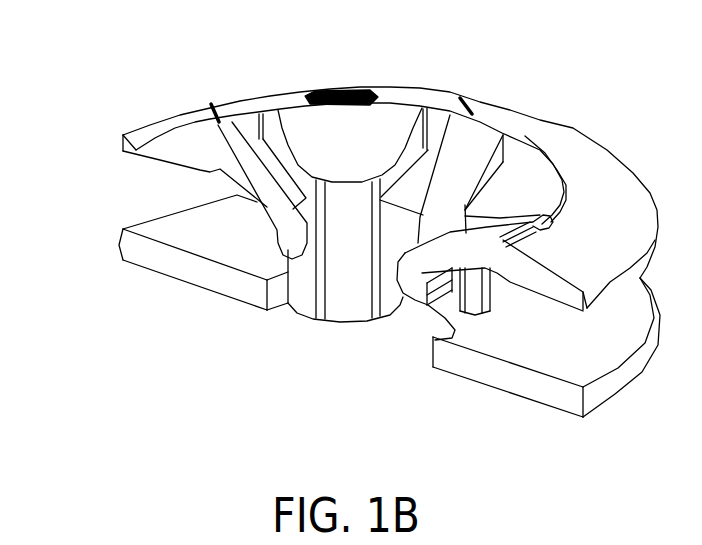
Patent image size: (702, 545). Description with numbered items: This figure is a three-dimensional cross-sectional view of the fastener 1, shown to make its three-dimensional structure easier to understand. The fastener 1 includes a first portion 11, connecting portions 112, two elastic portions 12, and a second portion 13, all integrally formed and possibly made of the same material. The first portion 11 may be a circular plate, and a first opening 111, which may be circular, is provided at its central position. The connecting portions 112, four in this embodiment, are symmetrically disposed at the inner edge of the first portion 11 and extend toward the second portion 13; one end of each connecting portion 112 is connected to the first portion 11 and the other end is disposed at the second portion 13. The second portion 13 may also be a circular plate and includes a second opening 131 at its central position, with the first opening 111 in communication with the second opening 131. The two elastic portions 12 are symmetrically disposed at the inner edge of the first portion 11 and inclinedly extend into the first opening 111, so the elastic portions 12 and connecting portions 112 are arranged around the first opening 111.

The fastener 1 is at (62, 140).
The first portion 11 is at (360, 198).
The first opening 111 is at (361, 92).
The connecting portion 112 is at (350, 232).
The elastic portion 12 is at (282, 187).
The second portion 13 is at (361, 306).
The second opening 131 is at (354, 336).